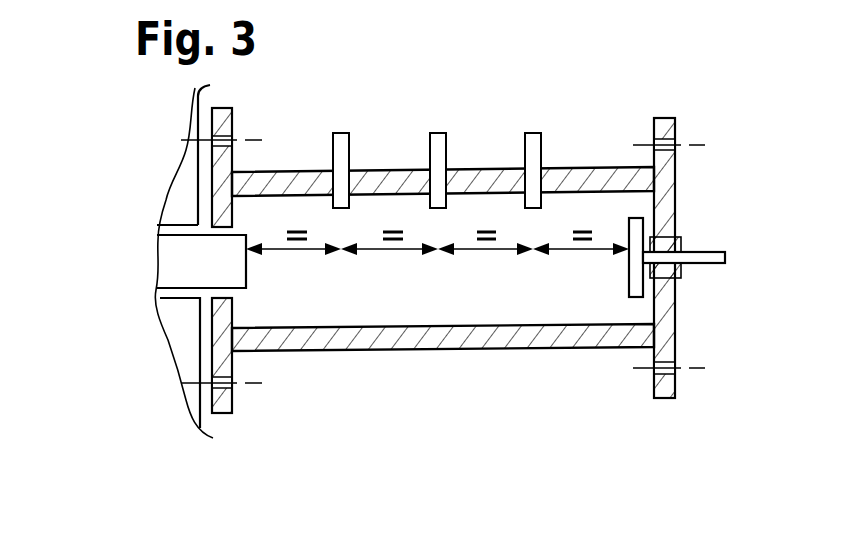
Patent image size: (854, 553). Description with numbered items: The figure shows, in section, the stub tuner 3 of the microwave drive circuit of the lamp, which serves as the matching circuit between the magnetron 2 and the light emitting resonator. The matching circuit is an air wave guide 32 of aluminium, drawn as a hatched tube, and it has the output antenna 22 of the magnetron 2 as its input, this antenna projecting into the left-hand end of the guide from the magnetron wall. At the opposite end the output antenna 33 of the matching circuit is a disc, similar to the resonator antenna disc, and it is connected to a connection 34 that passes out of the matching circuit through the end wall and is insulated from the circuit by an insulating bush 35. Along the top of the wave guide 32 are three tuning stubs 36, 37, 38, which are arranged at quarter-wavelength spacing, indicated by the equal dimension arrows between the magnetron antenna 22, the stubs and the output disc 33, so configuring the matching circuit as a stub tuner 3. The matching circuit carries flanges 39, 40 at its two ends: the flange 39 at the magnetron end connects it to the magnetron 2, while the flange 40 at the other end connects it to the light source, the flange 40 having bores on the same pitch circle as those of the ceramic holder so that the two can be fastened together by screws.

The magnetron 2 is at (187, 190).
The output antenna 22 is at (193, 264).
The stub tuner 3 is at (442, 372).
The air wave guide 32 is at (480, 177).
The output antenna 33 is at (630, 275).
The connection 34 is at (698, 265).
The insulating bush 35 is at (682, 242).
The tuning stub 36 is at (343, 138).
The tuning stub 37 is at (438, 138).
The tuning stub 38 is at (535, 138).
The flange 39 is at (225, 414).
The flange 40 is at (667, 398).